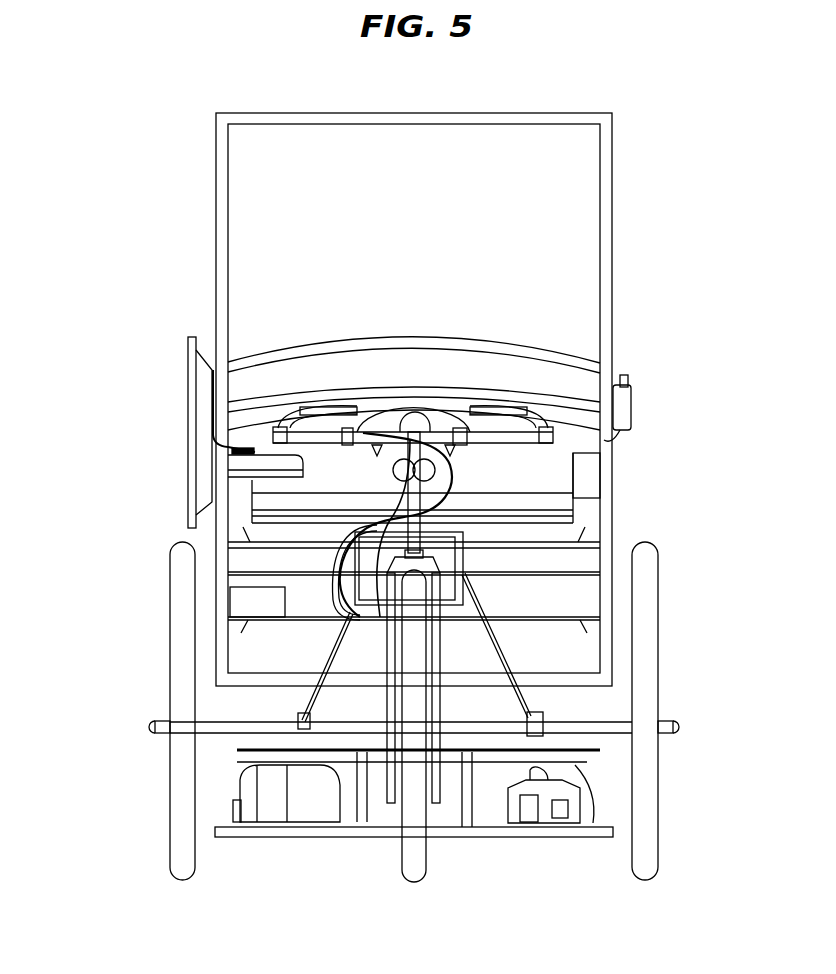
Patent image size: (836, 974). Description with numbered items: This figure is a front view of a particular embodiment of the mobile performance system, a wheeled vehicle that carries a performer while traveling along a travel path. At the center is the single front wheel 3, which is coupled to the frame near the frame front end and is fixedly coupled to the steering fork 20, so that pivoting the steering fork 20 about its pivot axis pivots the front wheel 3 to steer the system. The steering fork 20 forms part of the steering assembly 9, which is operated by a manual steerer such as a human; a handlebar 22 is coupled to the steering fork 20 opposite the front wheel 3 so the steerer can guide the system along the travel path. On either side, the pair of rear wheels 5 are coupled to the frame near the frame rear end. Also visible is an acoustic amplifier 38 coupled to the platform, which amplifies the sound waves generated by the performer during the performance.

The handlebar 22 is at (510, 437).
The steering assembly 9 is at (495, 446).
The acoustic amplifier 38 is at (252, 605).
The steering fork 20 is at (433, 653).
The rear wheels 5 is at (183, 805).
The front wheel 3 is at (420, 868).